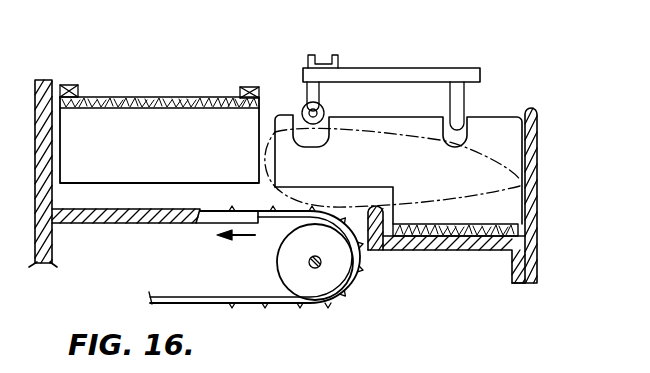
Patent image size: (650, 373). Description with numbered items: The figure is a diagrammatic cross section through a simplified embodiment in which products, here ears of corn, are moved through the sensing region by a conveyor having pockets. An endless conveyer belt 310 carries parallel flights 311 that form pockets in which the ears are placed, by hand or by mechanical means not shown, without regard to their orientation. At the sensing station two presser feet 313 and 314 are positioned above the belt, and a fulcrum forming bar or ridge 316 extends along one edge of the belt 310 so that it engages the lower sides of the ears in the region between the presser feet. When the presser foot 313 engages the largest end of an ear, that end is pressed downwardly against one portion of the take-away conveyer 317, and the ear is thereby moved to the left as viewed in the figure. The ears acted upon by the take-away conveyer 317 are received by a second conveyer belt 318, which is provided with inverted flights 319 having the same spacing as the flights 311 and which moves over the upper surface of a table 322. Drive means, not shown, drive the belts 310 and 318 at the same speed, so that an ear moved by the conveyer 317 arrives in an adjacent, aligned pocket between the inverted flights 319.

The endless conveyer belt 310 is at (396, 251).
The flights 311 is at (502, 128).
The presser foot 313 is at (310, 91).
The presser foot 314 is at (455, 103).
The fulcrum forming bar or ridge 316 is at (383, 196).
The take-away conveyer 317 is at (275, 223).
The conveyer belt 318 is at (158, 101).
The inverted flights 319 is at (100, 127).
The table 322 is at (104, 224).